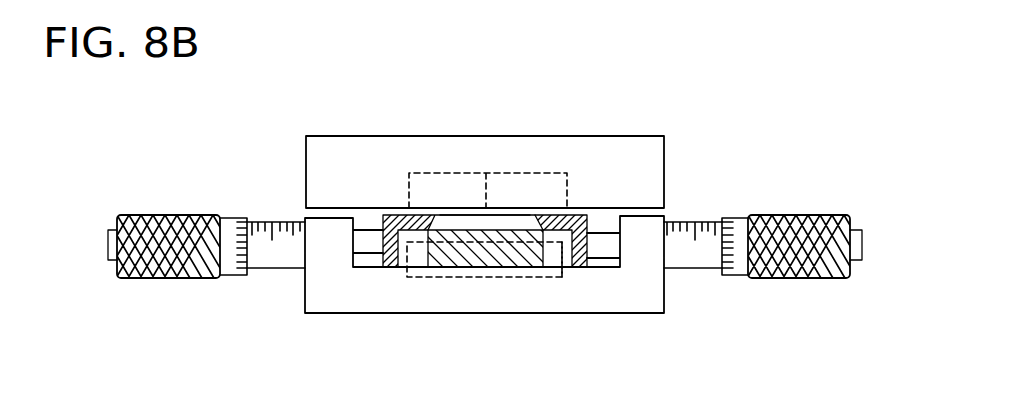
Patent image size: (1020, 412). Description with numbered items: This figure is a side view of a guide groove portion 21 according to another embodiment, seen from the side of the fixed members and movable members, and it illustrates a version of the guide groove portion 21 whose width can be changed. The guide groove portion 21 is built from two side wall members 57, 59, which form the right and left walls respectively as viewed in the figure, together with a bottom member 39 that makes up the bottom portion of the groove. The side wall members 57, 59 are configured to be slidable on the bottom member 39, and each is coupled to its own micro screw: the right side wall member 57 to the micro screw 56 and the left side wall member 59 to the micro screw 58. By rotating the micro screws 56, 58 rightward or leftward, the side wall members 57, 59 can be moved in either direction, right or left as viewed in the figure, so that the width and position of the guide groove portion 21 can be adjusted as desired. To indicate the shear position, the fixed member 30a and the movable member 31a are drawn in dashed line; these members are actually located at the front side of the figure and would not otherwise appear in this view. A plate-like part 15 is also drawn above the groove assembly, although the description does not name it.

The top plate / holding member 15 is at (617, 148).
The guide groove portion 21 is at (500, 227).
The fixed member 30a is at (422, 280).
The movable member 31a is at (554, 282).
The bottom member 39 is at (507, 255).
The micro screw 56 is at (806, 215).
The side wall member 57 is at (588, 244).
The micro screw 58 is at (163, 278).
The side wall member 59 is at (384, 235).